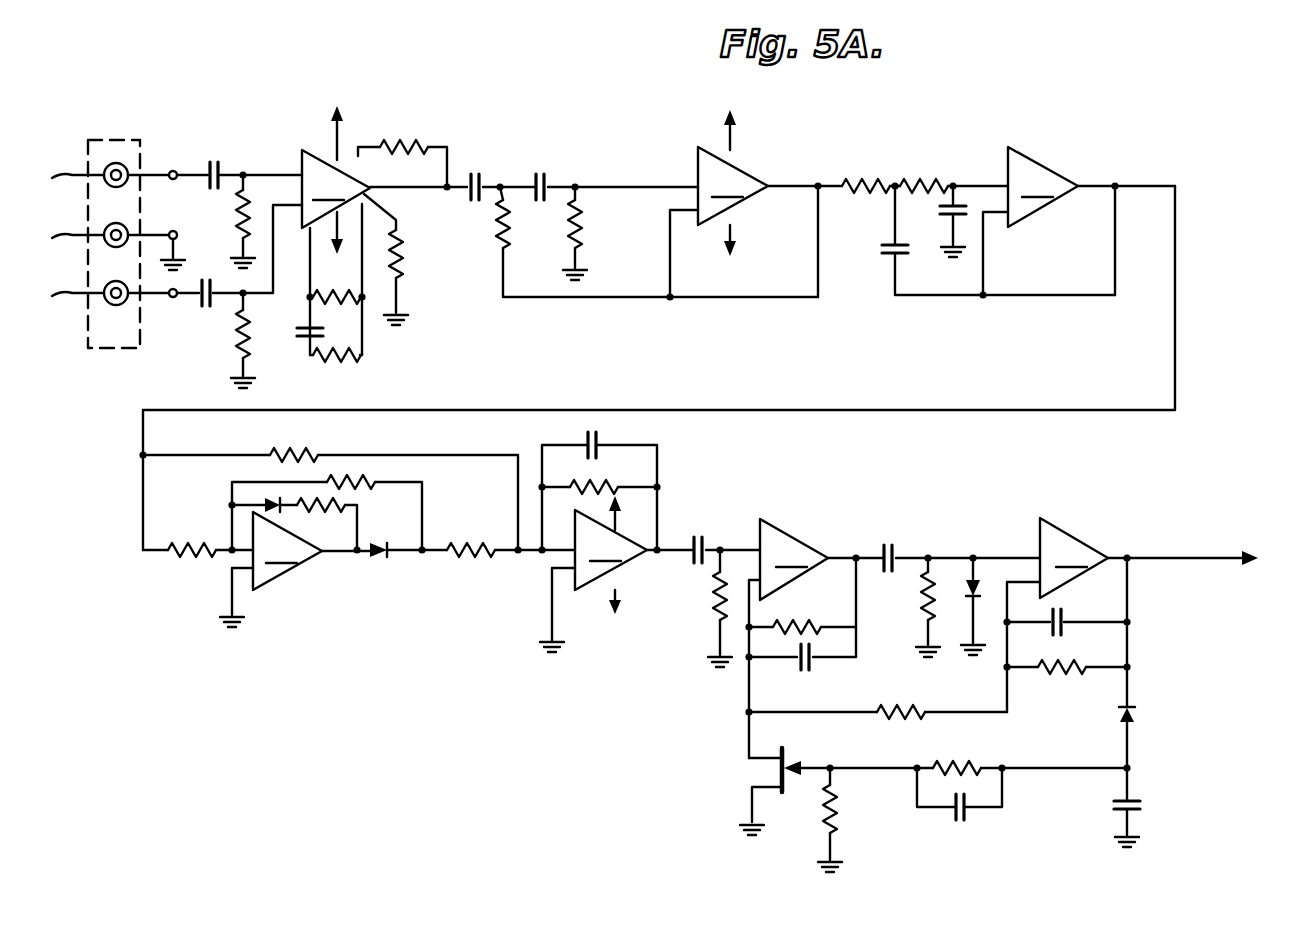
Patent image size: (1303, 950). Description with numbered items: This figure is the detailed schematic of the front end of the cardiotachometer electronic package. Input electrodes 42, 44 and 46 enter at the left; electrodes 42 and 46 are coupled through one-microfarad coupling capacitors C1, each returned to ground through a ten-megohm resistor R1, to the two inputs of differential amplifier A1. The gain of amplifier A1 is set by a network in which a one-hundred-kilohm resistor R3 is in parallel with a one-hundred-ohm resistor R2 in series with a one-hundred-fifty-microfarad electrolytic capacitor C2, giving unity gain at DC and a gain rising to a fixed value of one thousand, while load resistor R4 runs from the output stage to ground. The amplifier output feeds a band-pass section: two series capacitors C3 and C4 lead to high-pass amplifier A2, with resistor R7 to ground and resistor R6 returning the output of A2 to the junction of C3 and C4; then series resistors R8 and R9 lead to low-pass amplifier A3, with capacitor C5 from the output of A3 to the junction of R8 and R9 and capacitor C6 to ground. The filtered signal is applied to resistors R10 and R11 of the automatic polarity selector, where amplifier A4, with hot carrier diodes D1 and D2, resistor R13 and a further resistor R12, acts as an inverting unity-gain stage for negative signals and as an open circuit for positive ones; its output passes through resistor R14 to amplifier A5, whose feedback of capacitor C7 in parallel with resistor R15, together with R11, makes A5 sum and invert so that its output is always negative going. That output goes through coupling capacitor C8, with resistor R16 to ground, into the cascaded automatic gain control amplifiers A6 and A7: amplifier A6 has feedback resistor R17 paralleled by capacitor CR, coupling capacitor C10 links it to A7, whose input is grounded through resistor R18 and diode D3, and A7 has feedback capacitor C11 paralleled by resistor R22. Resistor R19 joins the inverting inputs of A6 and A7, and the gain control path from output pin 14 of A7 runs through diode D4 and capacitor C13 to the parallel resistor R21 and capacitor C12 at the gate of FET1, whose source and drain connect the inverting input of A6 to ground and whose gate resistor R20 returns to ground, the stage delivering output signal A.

The input connector block 14 is at (133, 140).
The input electrode 42 is at (67, 178).
The input electrode 44 is at (67, 238).
The input electrode 46 is at (67, 296).
The coupling capacitor C1 is at (210, 164).
The resistor R1 is at (236, 212).
The differential amplifier A1 is at (337, 179).
The resistor R2 is at (344, 360).
The resistor R3 is at (326, 310).
The electrolytic capacitor C2 is at (300, 340).
The load resistor R4 is at (400, 262).
The capacitor C3 is at (476, 171).
The capacitor C4 is at (538, 171).
The resistor R6 is at (494, 262).
The resistor R7 is at (583, 230).
The high-pass filter amplifier A2 is at (756, 190).
The resistor R8 is at (852, 176).
The resistor R9 is at (930, 176).
The capacitor C5 is at (888, 259).
The capacitor C6 is at (942, 212).
The low-pass filter amplifier A3 is at (1079, 221).
The resistor R10 is at (186, 545).
The resistor R11 is at (290, 448).
The feedback resistor R12 is at (378, 480).
The hot carrier diode D1 is at (262, 496).
The resistor R13 is at (306, 512).
The amplifier A4 is at (295, 569).
The hot carrier diode D2 is at (380, 562).
The resistor R14 is at (456, 562).
The capacitor C7 is at (596, 438).
The resistor R15 is at (596, 484).
The amplifier A5 is at (616, 574).
The coupling capacitor C8 is at (696, 534).
The resistor R16 is at (714, 612).
The amplifier A6 is at (813, 638).
The resistor R17 is at (790, 622).
The feedback capacitor CR is at (812, 670).
The coupling capacitor C10 is at (896, 544).
The resistor R18 is at (920, 596).
The hot carrier diode D3 is at (982, 594).
The amplifier A7 is at (1144, 615).
The capacitor C11 is at (1064, 618).
The resistor R22 is at (1048, 678).
The resistor R19 is at (920, 714).
The hot carrier diode D4 is at (1138, 724).
The capacitor C13 is at (1112, 802).
The resistor R21 is at (968, 766).
The capacitor C12 is at (964, 820).
The field effect transistor FET1 is at (780, 754).
The resistor R20 is at (838, 818).